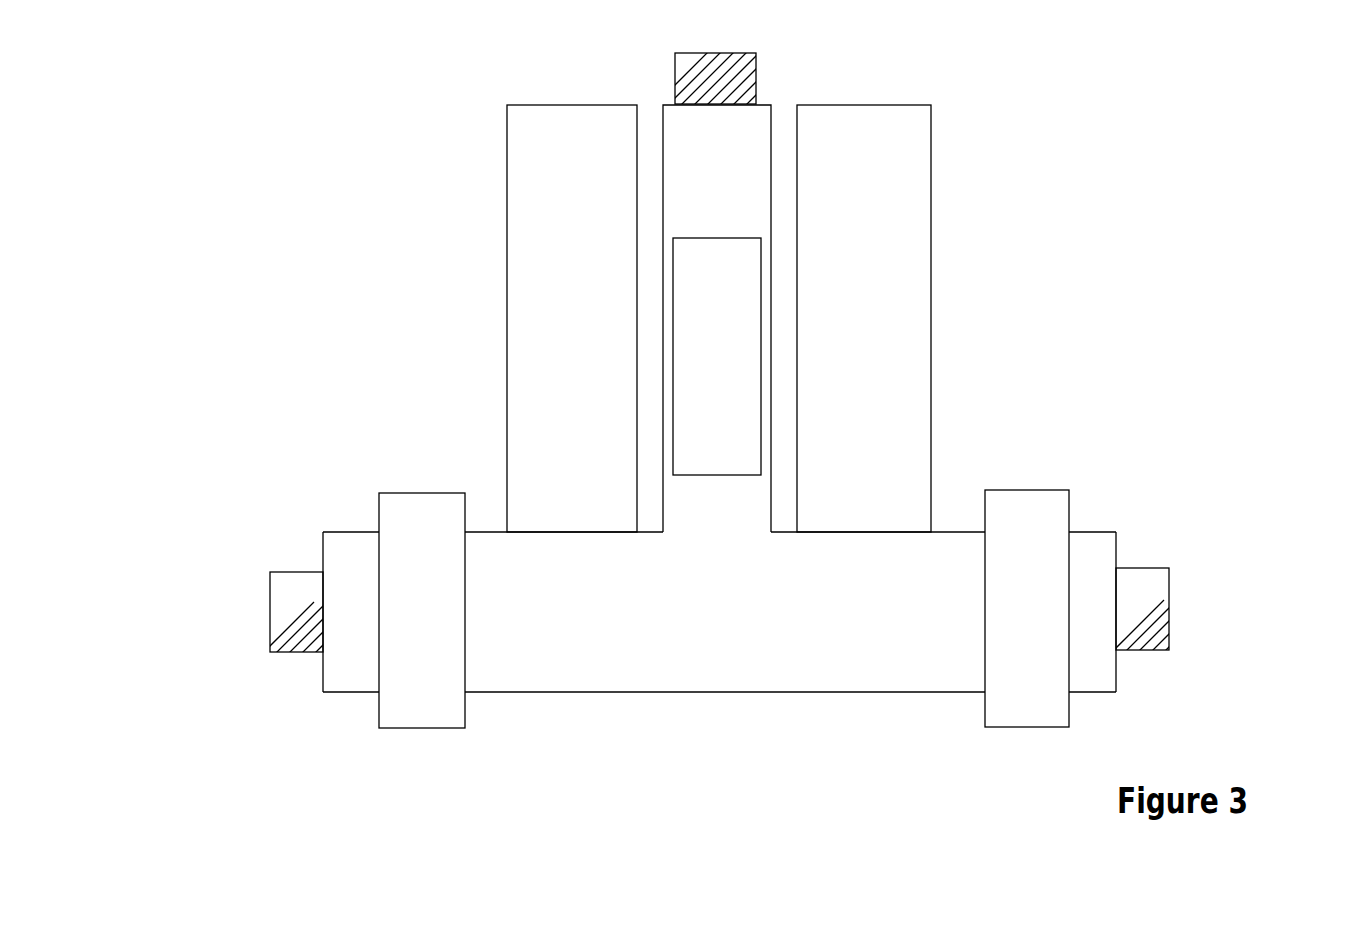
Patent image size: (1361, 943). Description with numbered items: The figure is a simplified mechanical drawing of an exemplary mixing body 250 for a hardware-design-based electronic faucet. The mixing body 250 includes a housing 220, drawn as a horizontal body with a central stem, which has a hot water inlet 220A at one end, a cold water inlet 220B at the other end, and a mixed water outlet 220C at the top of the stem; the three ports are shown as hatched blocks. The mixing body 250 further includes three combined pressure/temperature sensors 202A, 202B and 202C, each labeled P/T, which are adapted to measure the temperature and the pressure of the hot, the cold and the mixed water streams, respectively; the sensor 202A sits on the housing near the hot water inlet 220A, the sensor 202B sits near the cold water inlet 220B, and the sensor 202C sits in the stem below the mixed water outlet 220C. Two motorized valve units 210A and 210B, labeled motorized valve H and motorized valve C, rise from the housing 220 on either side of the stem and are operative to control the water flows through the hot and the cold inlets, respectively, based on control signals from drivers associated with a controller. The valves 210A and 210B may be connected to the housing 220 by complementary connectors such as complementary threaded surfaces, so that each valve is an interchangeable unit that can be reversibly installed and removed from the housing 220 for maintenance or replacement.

The housing 220 is at (719, 398).
The hot water inlet 220A is at (295, 610).
The cold water inlet 220B is at (1145, 607).
The mixed water outlet 220C is at (720, 78).
The motorized valve unit 210A is at (572, 318).
The motorized valve unit 210B is at (864, 318).
The combined pressure/temperature sensor 202A is at (422, 610).
The combined pressure/temperature sensor 202B is at (1027, 608).
The combined pressure/temperature sensor 202C is at (717, 356).
The mixing body 250 is at (664, 728).